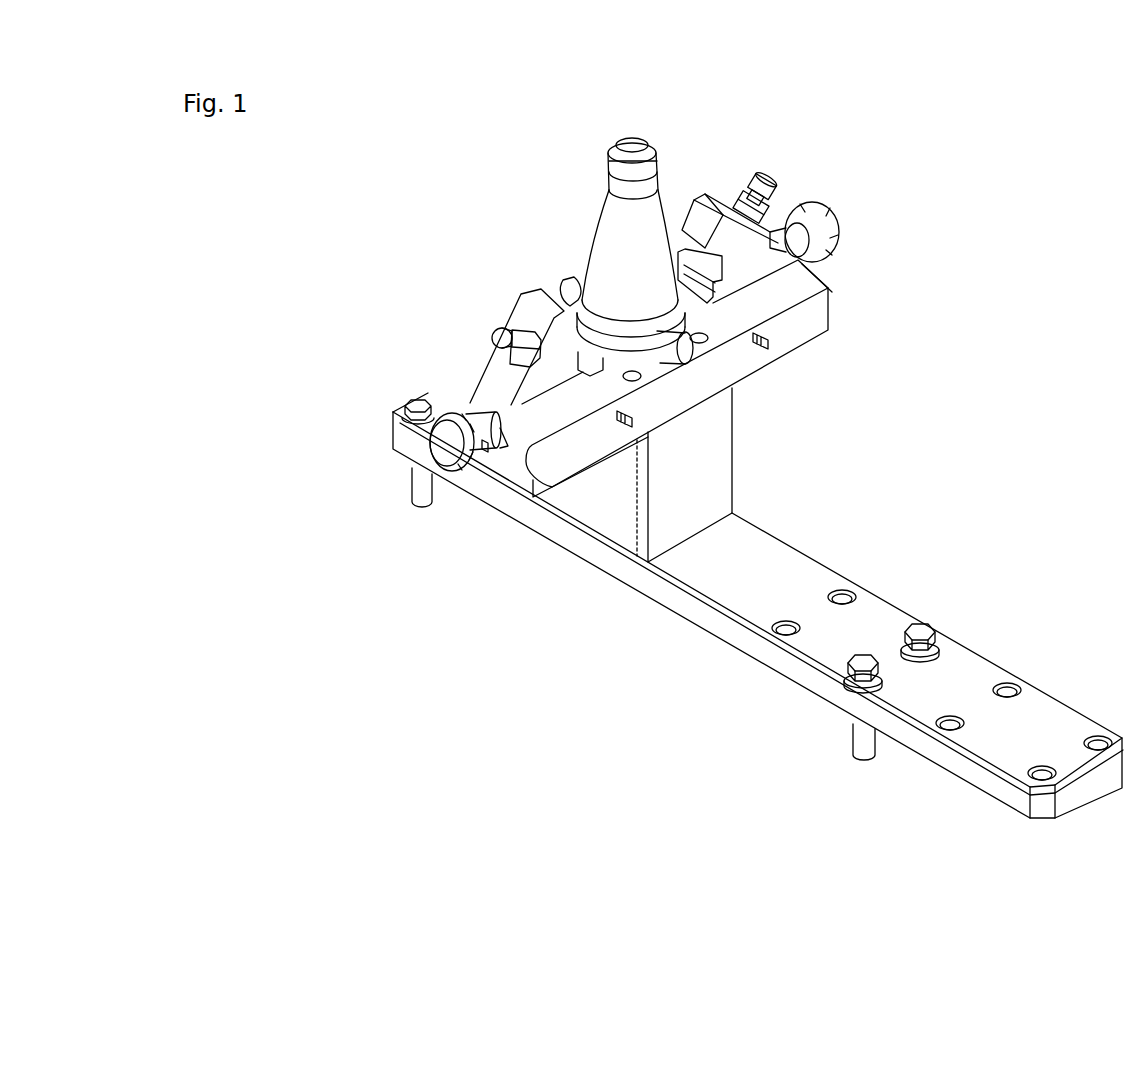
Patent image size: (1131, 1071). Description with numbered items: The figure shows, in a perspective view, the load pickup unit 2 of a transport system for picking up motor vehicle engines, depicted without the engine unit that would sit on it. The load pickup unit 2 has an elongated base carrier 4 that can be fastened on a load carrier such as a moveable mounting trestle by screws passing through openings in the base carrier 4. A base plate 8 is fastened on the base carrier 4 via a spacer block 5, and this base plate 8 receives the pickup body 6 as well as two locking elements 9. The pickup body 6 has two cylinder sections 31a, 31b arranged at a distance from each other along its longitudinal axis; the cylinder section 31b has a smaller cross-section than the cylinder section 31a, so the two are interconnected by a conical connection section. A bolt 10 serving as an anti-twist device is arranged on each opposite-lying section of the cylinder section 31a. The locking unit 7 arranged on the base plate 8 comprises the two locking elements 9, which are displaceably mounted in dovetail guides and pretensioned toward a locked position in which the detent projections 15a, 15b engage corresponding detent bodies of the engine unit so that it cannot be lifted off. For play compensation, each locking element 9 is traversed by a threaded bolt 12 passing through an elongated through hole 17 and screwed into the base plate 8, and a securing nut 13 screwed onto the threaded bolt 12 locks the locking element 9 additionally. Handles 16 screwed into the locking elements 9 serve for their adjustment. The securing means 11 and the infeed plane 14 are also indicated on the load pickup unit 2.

The load pickup unit 2 is at (673, 670).
The base carrier 4 is at (800, 577).
The spacer block 5 is at (712, 492).
The pickup body 6 is at (630, 247).
The locking unit 7 is at (880, 247).
The base plate 8 is at (587, 452).
The locking elements 9 is at (758, 248).
The anti-twist device (bolt) 10 is at (580, 296).
The securing means 11 is at (797, 160).
The threaded bolt 12 is at (766, 178).
The securing nut 13 is at (729, 198).
The infeed plane 14 is at (690, 218).
The detent projection 15a is at (757, 242).
The detent projection 15b is at (706, 250).
The handle 16 is at (827, 233).
The through hole 17 is at (490, 396).
The cylinder section 31a is at (623, 353).
The cylinder section 31b is at (617, 180).